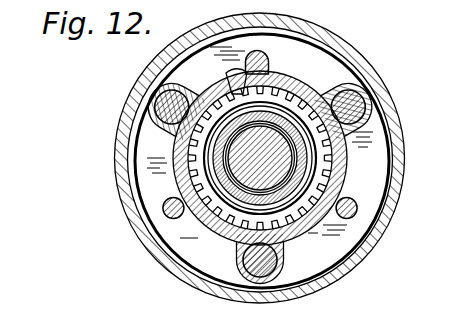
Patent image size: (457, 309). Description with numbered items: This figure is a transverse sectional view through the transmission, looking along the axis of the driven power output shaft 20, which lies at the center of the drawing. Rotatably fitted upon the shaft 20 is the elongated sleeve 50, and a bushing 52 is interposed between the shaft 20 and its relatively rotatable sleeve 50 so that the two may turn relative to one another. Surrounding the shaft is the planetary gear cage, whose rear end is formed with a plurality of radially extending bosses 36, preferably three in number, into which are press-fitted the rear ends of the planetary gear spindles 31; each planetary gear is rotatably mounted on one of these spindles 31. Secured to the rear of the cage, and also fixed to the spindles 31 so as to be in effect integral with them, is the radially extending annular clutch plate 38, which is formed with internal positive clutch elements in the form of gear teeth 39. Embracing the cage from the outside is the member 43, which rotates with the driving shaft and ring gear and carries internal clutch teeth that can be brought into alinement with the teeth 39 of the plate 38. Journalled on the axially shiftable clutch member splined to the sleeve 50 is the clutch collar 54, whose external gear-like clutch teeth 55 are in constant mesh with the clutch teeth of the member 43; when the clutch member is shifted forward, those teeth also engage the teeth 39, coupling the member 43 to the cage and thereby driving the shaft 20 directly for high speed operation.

The driven power output shaft 20 is at (287, 166).
The planetary gear spindle 31 is at (358, 102).
The radially extending bosses 36 is at (372, 117).
The annular clutch plate 38 is at (299, 56).
The clutch gear teeth 39 is at (234, 93).
The member 43 is at (353, 60).
The elongated sleeve 50 is at (288, 194).
The bushing 52 is at (337, 168).
The clutch collar 54 is at (215, 224).
The clutch teeth 55 is at (236, 86).